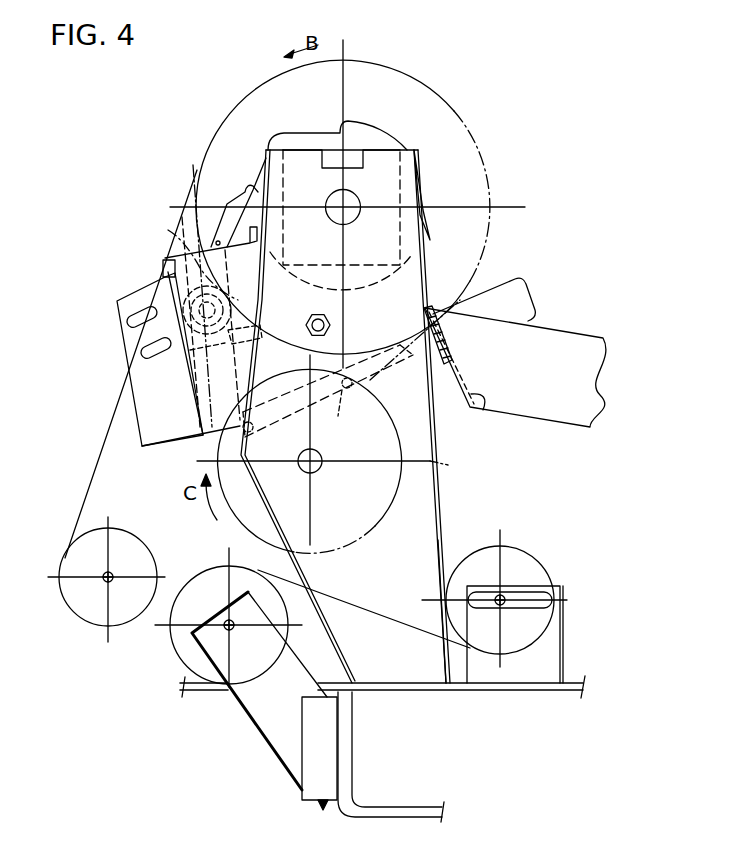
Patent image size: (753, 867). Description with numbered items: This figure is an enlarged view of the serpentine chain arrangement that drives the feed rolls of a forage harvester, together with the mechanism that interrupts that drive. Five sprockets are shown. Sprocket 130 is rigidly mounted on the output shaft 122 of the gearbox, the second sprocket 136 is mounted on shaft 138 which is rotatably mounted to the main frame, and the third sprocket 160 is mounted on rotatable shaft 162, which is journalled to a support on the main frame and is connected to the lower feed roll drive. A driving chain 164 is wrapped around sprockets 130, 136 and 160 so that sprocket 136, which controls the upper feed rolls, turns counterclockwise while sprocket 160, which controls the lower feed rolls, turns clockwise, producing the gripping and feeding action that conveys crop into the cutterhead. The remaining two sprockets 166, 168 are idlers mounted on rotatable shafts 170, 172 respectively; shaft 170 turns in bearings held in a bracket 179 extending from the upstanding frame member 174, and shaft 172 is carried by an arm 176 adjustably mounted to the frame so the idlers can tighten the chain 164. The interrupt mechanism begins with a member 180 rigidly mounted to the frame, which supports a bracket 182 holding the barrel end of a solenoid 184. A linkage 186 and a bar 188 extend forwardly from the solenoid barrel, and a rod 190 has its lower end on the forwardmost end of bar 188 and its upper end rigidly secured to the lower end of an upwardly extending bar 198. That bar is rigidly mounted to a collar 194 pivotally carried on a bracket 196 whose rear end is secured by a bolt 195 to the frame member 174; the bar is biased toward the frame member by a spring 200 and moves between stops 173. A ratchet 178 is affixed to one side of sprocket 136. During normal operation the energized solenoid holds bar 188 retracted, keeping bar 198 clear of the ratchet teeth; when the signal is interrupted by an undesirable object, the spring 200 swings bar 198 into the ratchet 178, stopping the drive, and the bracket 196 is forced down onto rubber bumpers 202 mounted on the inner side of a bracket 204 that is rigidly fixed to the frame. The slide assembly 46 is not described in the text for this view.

The slide assembly 46 is at (102, 295).
The output shaft 122 is at (120, 565).
The sprocket 130 is at (66, 596).
The second sprocket 136 is at (478, 140).
The shaft 138 is at (352, 216).
The third sprocket 160 is at (433, 463).
The rotatable shaft 162 is at (322, 470).
The driving chain 164 is at (82, 486).
The idler sprocket 166 is at (522, 562).
The idler sprocket 168 is at (172, 622).
The rotatable shaft 170 is at (497, 603).
The rotatable shaft 172 is at (236, 628).
The stops 173 is at (181, 239).
The upstanding frame member 174 is at (438, 506).
The arm 176 is at (250, 722).
The ratchet 178 is at (373, 130).
The bracket 179 is at (556, 652).
The member 180 is at (605, 338).
The bracket 182 is at (484, 411).
The solenoid 184 is at (534, 304).
The linkage 186 is at (397, 364).
The bar 188 is at (328, 397).
The rod 190 is at (247, 360).
The collar 194 is at (208, 296).
The bolt 195 is at (332, 326).
The bracket 196 is at (343, 301).
The bar 198 is at (249, 192).
The spring 200 is at (221, 336).
The rubber bumpers 202 is at (250, 402).
The bracket 204 is at (168, 447).